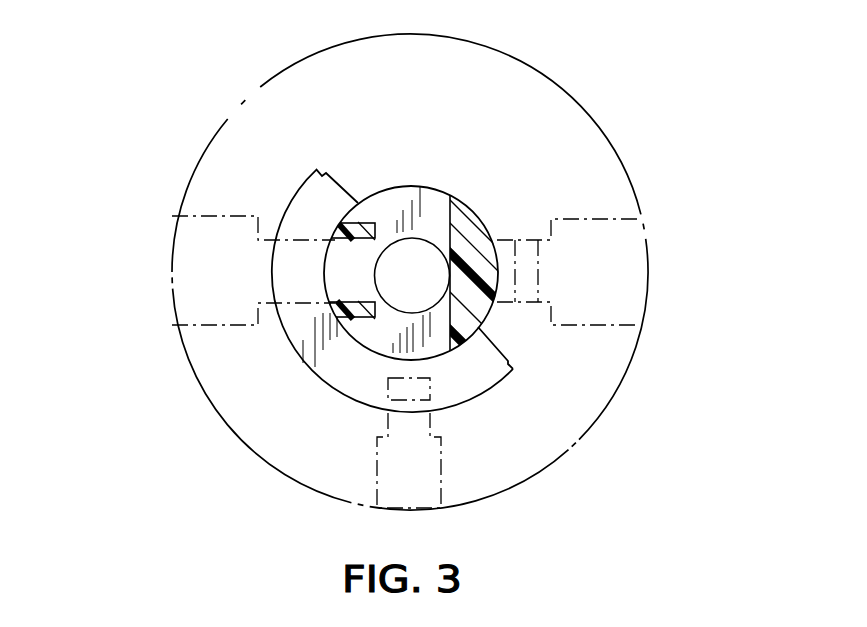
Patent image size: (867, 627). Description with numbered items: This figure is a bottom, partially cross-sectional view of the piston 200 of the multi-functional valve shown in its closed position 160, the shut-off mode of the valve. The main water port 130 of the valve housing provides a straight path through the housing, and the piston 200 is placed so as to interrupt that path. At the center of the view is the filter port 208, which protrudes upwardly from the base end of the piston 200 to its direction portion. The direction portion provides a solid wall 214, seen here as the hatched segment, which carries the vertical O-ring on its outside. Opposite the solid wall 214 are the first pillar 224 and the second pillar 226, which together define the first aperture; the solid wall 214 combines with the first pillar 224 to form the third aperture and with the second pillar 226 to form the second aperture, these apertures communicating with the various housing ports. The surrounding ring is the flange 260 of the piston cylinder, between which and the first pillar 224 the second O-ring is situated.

The main water port 130 is at (195, 270).
The closed position 160 is at (650, 395).
The piston 200 is at (182, 419).
The filter port 208 is at (442, 288).
The solid wall 214 is at (481, 228).
The first pillar 224 is at (367, 217).
The second pillar 226 is at (337, 305).
The flange 260 is at (340, 374).